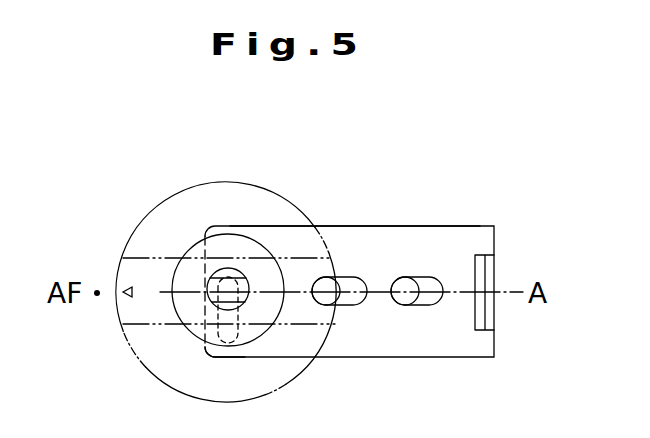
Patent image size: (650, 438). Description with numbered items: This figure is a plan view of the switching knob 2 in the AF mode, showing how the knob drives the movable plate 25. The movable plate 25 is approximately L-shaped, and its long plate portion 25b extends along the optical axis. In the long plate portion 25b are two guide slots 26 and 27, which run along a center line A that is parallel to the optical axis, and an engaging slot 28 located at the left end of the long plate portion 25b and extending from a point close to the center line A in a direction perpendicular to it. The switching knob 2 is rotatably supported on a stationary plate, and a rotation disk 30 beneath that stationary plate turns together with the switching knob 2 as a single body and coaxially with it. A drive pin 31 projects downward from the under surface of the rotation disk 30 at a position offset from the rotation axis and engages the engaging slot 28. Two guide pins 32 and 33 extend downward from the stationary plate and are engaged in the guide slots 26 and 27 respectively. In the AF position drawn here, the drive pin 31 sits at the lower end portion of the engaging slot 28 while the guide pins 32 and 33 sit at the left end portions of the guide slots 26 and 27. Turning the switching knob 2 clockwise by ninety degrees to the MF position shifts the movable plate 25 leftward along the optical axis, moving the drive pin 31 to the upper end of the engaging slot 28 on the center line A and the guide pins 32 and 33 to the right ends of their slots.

The switching knob 2 is at (210, 194).
The movable plate 25 is at (474, 234).
The long plate portion 25b is at (383, 243).
The guide slot 26 is at (349, 287).
The guide slot 27 is at (428, 285).
The engaging slot 28 is at (216, 322).
The rotation disk 30 is at (198, 250).
The drive pin 31 is at (238, 342).
The guide pin 32 is at (329, 296).
The guide pin 33 is at (404, 298).